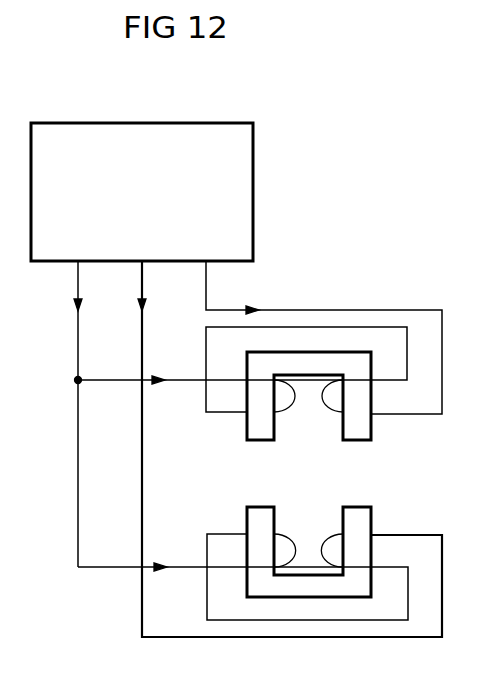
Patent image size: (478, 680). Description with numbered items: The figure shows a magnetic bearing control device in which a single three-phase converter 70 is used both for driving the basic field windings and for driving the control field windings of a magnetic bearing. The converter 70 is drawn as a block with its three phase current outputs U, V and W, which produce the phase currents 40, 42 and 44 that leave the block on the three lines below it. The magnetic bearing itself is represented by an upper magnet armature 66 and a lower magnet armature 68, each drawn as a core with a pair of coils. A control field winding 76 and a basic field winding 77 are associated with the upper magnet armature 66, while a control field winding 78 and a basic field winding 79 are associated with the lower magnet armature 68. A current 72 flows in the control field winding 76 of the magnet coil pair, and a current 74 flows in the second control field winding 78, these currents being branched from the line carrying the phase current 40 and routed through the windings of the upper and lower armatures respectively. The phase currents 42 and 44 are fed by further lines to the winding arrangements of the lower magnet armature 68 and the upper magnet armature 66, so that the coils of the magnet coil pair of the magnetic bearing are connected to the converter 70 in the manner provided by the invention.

The three-phase converter 70 is at (212, 122).
The phase current 40 is at (76, 287).
The phase current 42 is at (140, 286).
The phase current 44 is at (208, 285).
The current 72 is at (185, 383).
The current 74 is at (183, 563).
The upper magnet armature 66 is at (342, 412).
The lower magnet armature 68 is at (342, 538).
The control field winding 76 is at (286, 418).
The basic field winding 77 is at (337, 418).
The control field winding 78 is at (289, 531).
The basic field winding 79 is at (340, 531).